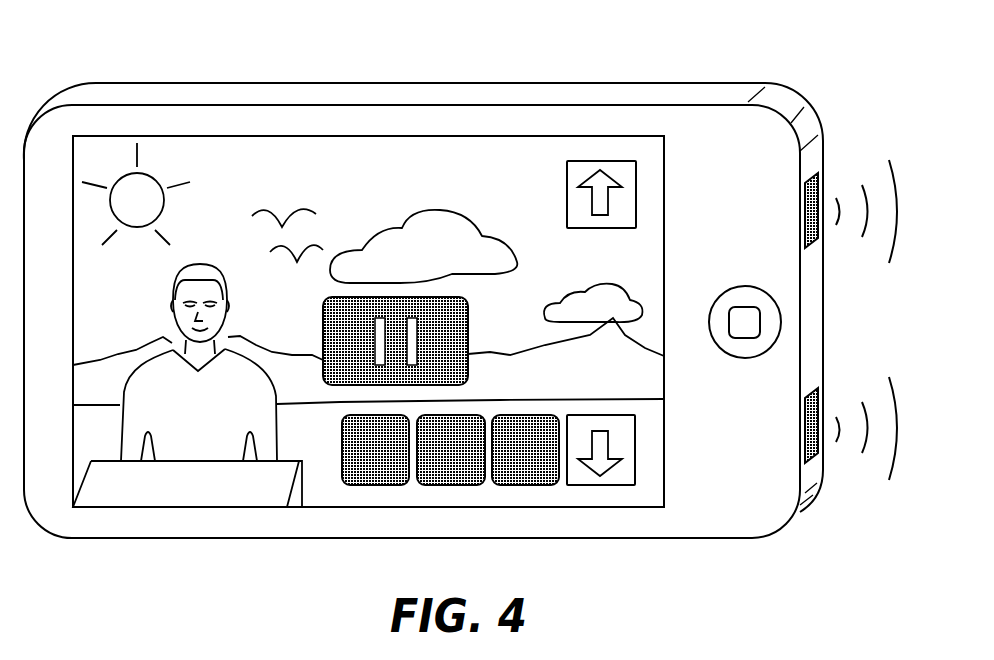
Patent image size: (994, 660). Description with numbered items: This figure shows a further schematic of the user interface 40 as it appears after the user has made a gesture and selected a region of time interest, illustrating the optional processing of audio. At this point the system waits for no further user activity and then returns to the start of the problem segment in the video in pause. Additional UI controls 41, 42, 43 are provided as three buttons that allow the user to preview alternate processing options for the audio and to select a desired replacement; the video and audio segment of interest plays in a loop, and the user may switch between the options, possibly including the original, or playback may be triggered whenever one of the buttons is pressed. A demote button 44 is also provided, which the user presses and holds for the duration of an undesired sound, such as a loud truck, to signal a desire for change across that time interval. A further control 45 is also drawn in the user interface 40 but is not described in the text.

The mobile device 40 is at (474, 313).
The selectable option A button 41 is at (378, 485).
The selectable option B button 42 is at (453, 485).
The selectable option C button 43 is at (527, 485).
The down scroll button 44 is at (605, 485).
The up scroll button 45 is at (597, 160).